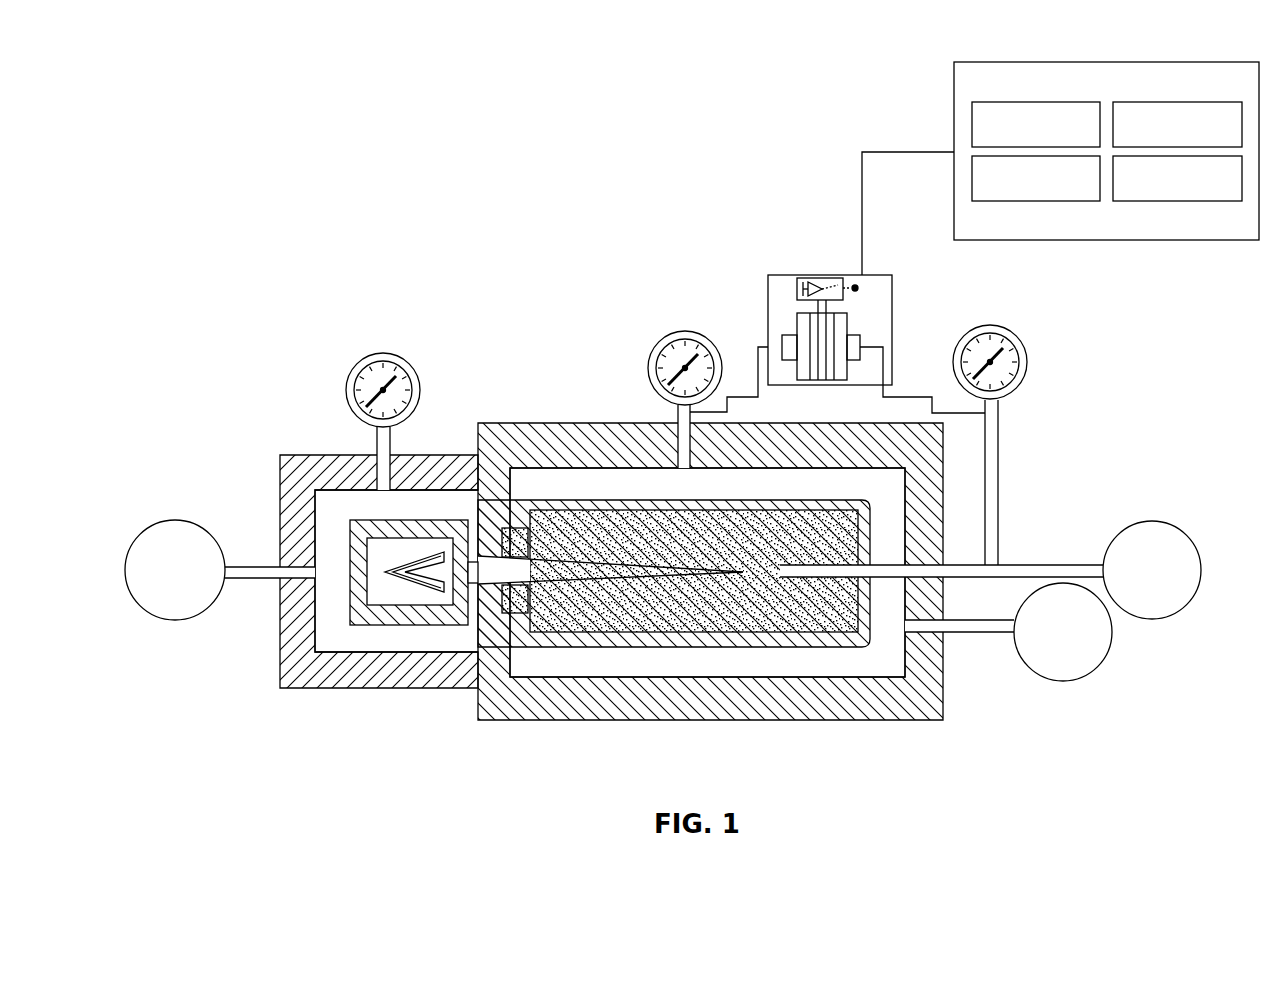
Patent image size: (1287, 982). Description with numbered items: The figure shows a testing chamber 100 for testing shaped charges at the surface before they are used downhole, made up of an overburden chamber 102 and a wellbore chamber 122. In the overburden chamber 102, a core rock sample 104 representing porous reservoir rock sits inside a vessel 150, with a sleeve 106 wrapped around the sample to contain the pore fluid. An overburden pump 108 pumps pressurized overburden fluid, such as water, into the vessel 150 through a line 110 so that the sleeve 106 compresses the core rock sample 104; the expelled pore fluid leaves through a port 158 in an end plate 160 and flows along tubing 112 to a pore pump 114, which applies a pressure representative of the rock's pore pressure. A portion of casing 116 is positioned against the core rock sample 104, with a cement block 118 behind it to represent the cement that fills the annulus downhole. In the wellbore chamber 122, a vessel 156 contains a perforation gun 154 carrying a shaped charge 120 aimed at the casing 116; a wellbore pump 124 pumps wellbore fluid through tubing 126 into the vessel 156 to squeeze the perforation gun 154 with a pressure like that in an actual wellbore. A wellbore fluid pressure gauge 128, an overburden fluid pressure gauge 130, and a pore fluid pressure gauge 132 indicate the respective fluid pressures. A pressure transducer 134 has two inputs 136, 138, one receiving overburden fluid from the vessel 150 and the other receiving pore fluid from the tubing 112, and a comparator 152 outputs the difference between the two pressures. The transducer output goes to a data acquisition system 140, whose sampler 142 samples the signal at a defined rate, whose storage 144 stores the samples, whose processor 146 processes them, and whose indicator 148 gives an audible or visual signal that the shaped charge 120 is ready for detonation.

The testing chamber 100 is at (368, 130).
The overburden chamber 102 is at (943, 706).
The core rock sample 104 is at (762, 566).
The sleeve 106 is at (840, 650).
The overburden pump 108 is at (1093, 672).
The over burden fluid line 110 is at (963, 634).
The tubing 112 is at (1040, 563).
The pore pump 114 is at (1202, 556).
The casing 116 is at (518, 625).
The cement block 118 is at (518, 547).
The shaped charge 120 is at (425, 608).
The wellbore chamber 122 is at (435, 452).
The wellbore pump 124 is at (163, 522).
The tubing 126 is at (258, 565).
The wellbore fluid pressure gauge 128 is at (346, 386).
The overburden fluid pressure gauge 130 is at (648, 363).
The pore fluid pressure gauge 132 is at (1028, 364).
The pressure transducer 134 is at (893, 290).
The input 136 is at (758, 368).
The input 138 is at (888, 355).
The data acquisition system 140 is at (1060, 152).
The sampler 142 is at (1040, 102).
The storage 144 is at (1040, 201).
The processor 146 is at (1183, 102).
The indicator 148 is at (1183, 201).
The vessel 150 is at (655, 678).
The comparator 152 is at (793, 288).
The perforation gun 154 is at (430, 627).
The vessel 156 is at (325, 660).
The port 158 is at (848, 573).
The end plate 160 is at (863, 597).